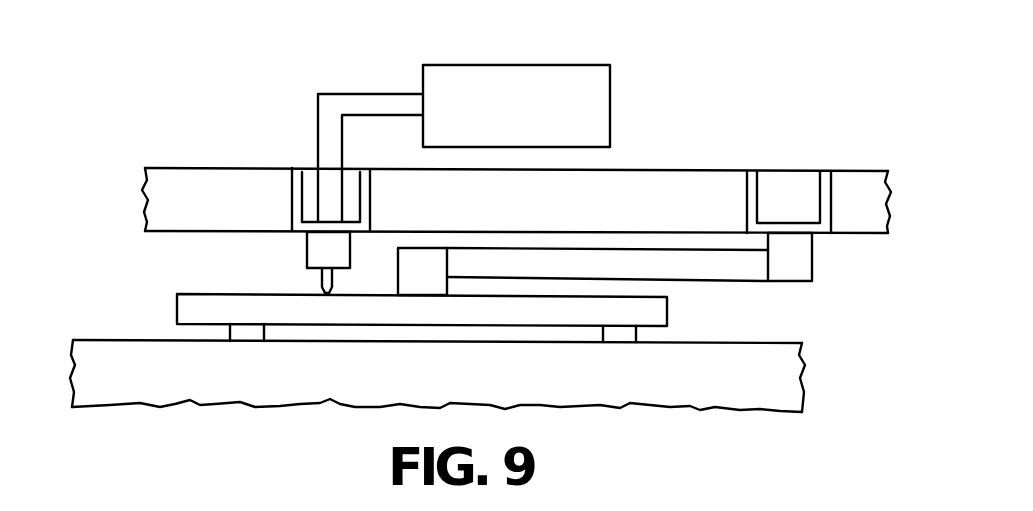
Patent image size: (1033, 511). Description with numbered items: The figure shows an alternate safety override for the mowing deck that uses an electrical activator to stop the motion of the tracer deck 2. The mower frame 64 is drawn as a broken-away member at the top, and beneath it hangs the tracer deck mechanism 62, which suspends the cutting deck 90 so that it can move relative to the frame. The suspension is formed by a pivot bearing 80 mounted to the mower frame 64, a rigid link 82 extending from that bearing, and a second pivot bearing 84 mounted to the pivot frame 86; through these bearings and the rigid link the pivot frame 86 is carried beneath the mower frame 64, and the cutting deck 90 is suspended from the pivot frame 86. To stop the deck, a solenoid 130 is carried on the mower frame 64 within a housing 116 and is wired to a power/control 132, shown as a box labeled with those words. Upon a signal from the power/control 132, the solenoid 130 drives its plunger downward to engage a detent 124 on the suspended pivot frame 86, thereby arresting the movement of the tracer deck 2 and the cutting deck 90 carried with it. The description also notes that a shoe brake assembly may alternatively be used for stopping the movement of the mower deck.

The tracer deck 2 is at (124, 302).
The tracer deck mechanism 62 is at (182, 257).
The mower frame 64 is at (694, 170).
The pivot bearing 80 is at (836, 189).
The rigid link 82 is at (705, 283).
The pivot bearing 84 is at (432, 260).
The pivot frame 86 is at (497, 322).
The cutting deck 90 is at (757, 398).
The socket 116 is at (292, 189).
The detent 124 is at (320, 293).
The solenoid 130 is at (306, 247).
The power/control 132 is at (525, 65).